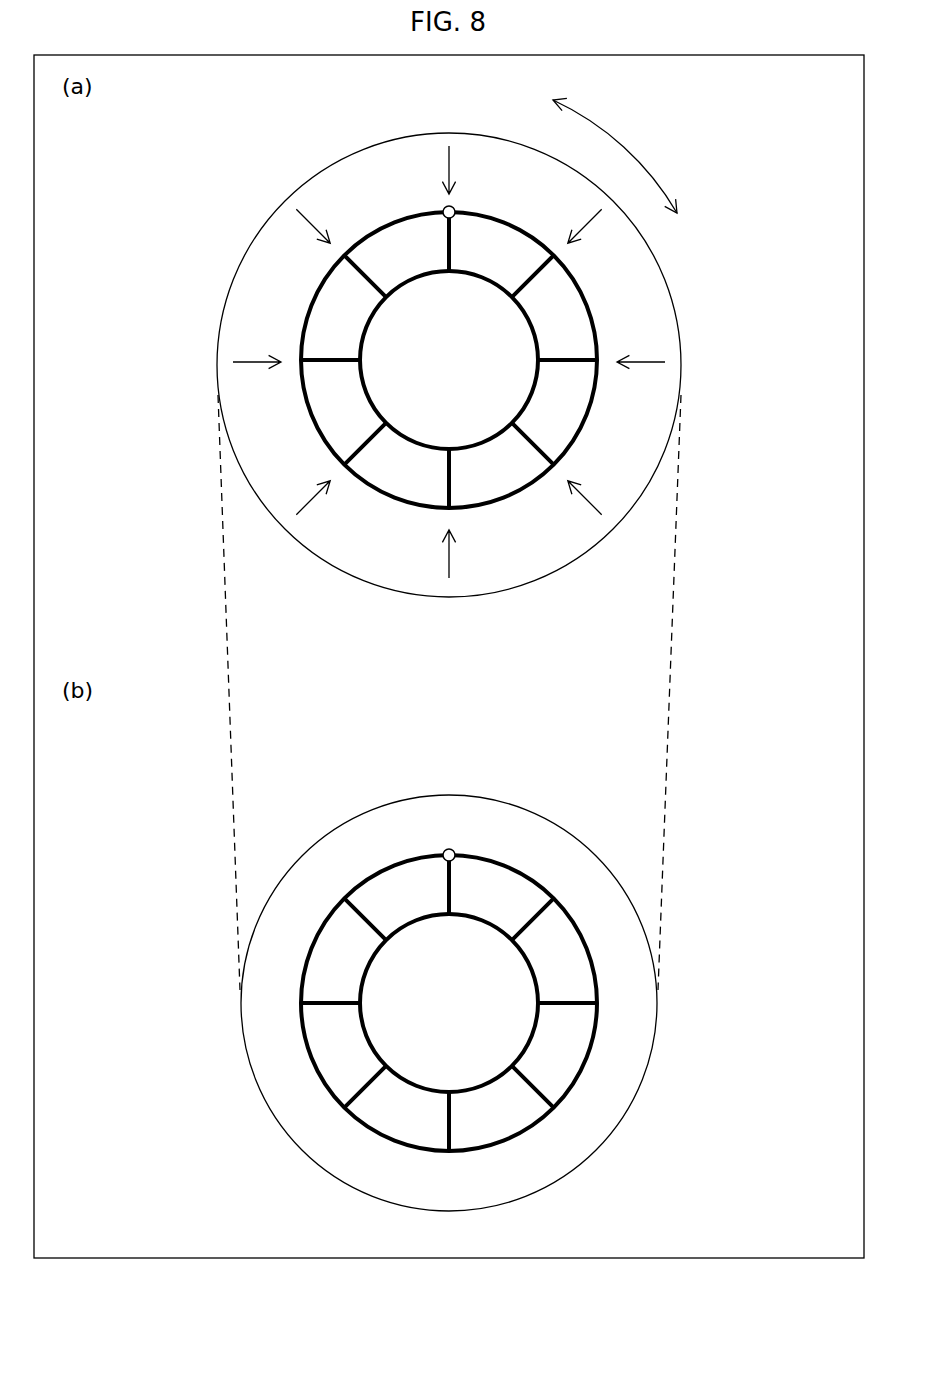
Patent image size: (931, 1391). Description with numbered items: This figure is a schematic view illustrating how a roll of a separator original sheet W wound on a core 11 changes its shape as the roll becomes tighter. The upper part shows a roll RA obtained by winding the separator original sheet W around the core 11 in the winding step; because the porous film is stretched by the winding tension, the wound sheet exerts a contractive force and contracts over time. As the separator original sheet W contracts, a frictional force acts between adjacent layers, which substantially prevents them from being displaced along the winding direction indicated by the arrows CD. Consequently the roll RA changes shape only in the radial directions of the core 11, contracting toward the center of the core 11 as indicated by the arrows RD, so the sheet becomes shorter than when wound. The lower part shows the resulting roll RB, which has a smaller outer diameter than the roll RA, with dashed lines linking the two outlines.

The core 11 is at (373, 232).
The separator original sheet W is at (625, 315).
The roll RA is at (278, 127).
The roll RB is at (303, 803).
The arrows indicating radial directions RD is at (312, 237).
The arrows indicating winding direction CD is at (630, 150).